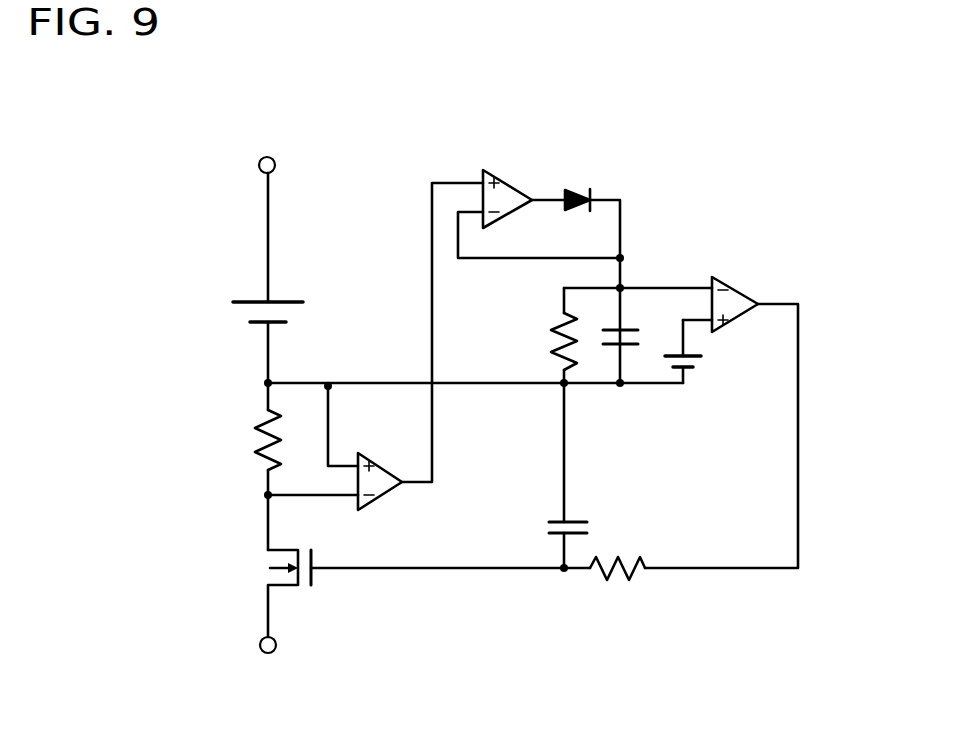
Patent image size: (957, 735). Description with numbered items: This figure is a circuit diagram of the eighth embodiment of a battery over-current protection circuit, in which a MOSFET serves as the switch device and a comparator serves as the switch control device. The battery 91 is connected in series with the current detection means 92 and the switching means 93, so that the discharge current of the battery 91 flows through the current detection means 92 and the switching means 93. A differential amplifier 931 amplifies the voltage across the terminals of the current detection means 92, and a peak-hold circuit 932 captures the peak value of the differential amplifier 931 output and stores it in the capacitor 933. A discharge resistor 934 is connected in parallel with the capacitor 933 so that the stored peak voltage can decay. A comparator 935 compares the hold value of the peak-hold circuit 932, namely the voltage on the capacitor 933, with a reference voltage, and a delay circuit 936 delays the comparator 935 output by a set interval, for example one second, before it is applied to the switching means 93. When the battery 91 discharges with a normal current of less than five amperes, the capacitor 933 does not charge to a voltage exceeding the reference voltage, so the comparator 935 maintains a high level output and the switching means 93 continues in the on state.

The battery 91 is at (250, 312).
The current detection means 92 is at (258, 432).
The switching means 93 is at (262, 569).
The differential amplifier 931 is at (387, 497).
The peak-hold circuit 932 is at (627, 183).
The capacitor 933 is at (633, 312).
The discharge resistor 934 is at (549, 334).
The comparator 935 is at (742, 286).
The delay circuit 936 is at (604, 534).